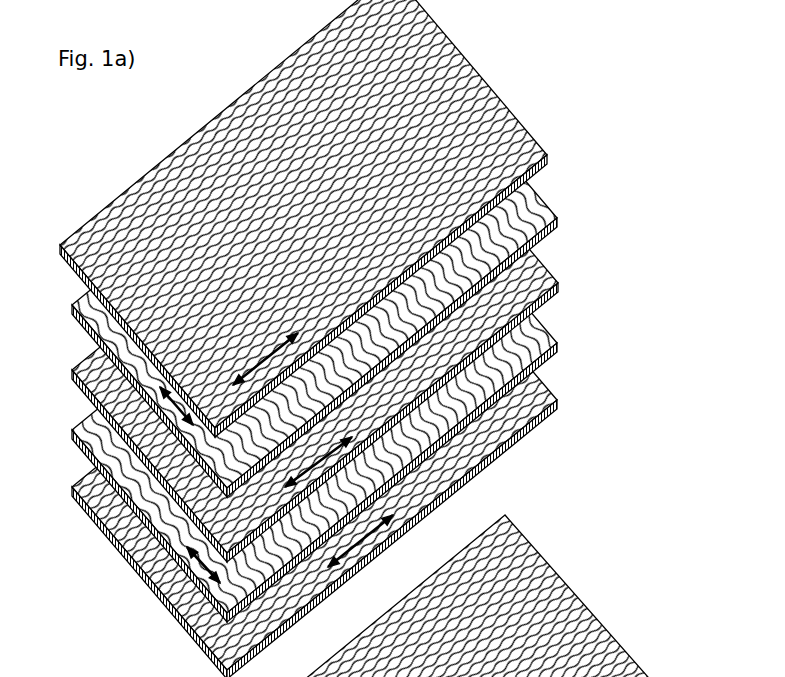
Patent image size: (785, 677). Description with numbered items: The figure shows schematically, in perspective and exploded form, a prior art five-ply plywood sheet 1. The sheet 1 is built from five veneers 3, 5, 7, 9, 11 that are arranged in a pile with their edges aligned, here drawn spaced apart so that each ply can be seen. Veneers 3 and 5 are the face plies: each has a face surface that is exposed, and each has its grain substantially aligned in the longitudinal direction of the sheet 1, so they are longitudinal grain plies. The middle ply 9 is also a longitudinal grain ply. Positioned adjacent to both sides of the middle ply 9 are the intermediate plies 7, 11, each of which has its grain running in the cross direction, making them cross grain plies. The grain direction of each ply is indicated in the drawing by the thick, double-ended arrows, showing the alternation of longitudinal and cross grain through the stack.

The 5-ply plywood sheet 1 is at (502, 359).
The face ply veneer 3 is at (307, 218).
The face ply veneer 5 is at (350, 447).
The intermediate ply 7 is at (354, 266).
The middle ply 9 is at (354, 331).
The intermediate ply 11 is at (357, 391).